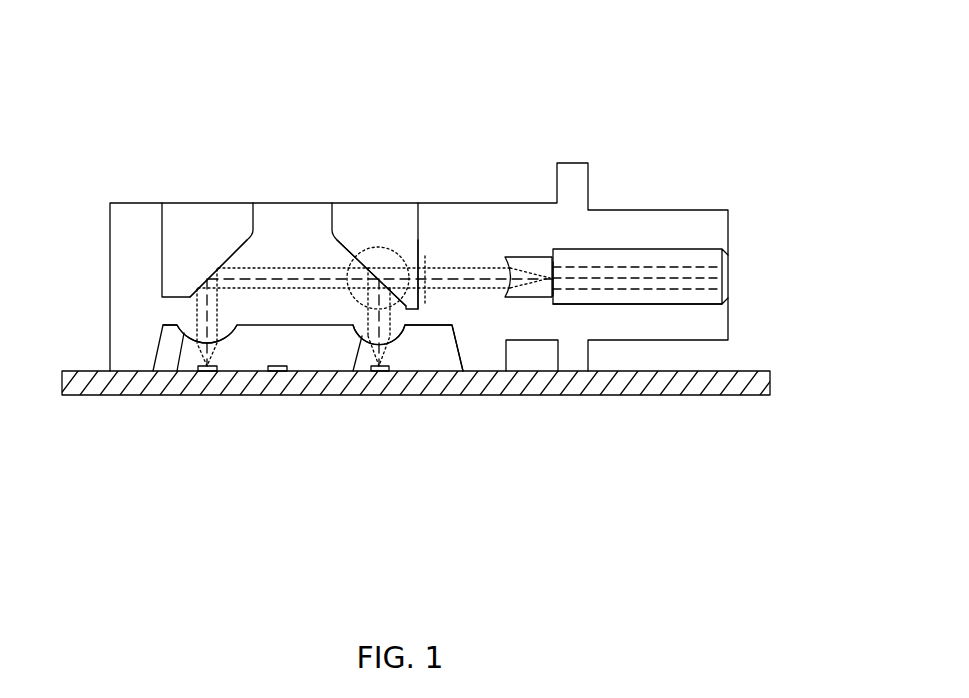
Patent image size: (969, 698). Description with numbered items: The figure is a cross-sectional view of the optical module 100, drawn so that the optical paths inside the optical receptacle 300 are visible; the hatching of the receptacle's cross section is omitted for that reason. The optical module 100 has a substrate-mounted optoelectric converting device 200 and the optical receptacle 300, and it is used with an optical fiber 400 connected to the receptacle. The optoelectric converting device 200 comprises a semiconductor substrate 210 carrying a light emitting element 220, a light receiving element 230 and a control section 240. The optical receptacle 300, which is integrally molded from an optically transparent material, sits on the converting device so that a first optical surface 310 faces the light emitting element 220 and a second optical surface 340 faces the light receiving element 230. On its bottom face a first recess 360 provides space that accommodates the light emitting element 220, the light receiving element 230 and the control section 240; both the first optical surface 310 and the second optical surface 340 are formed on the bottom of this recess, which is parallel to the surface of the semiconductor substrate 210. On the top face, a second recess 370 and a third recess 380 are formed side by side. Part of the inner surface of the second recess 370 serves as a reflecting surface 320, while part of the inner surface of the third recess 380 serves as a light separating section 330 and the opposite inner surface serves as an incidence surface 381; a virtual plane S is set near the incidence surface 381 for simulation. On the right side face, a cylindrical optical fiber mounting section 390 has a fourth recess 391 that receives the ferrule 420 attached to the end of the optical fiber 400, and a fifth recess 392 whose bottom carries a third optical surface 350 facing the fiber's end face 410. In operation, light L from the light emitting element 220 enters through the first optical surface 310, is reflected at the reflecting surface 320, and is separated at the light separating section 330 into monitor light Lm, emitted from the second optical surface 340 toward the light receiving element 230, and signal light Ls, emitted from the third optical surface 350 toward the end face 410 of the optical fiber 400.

The optical module 100 is at (579, 58).
The optoelectric converting device 200 is at (714, 418).
The semiconductor substrate 210 is at (75, 388).
The light emitting element 220 is at (208, 373).
The light receiving element 230 is at (381, 373).
The control section 240 is at (277, 373).
The optical receptacle 300 is at (732, 188).
The first optical surface 310 is at (177, 371).
The reflecting surface 320 is at (254, 238).
The light separating section 330 is at (340, 245).
The second optical surface 340 is at (353, 371).
The third optical surface 350 is at (507, 259).
The first recess 360 is at (458, 384).
The second recess 370 is at (208, 190).
The third recess 380 is at (362, 190).
The incidence surface 381 is at (413, 250).
The optical fiber mounting section 390 is at (745, 290).
The fourth recess 391 is at (677, 262).
The fifth recess 392 is at (537, 259).
The optical fiber 400 is at (652, 290).
The end face 410 is at (552, 282).
The ferrule 420 is at (702, 298).
The light L is at (197, 317).
The signal light Ls is at (453, 268).
The monitor light Lm is at (388, 336).
The virtual plane S is at (425, 256).